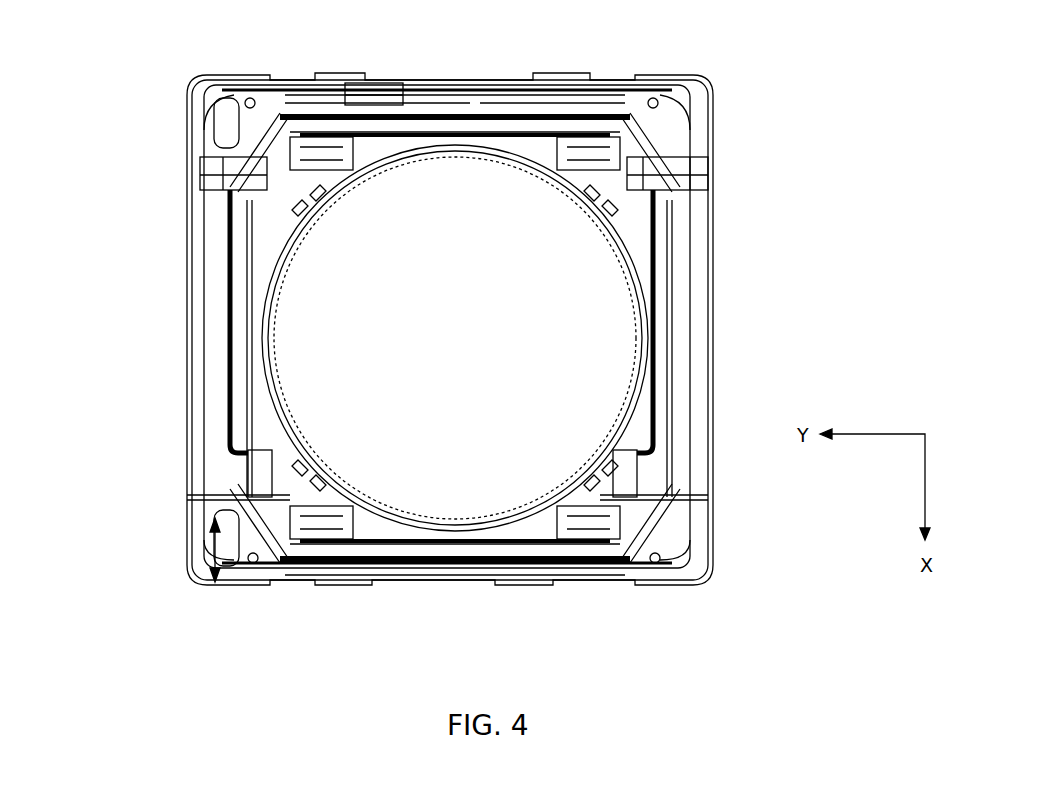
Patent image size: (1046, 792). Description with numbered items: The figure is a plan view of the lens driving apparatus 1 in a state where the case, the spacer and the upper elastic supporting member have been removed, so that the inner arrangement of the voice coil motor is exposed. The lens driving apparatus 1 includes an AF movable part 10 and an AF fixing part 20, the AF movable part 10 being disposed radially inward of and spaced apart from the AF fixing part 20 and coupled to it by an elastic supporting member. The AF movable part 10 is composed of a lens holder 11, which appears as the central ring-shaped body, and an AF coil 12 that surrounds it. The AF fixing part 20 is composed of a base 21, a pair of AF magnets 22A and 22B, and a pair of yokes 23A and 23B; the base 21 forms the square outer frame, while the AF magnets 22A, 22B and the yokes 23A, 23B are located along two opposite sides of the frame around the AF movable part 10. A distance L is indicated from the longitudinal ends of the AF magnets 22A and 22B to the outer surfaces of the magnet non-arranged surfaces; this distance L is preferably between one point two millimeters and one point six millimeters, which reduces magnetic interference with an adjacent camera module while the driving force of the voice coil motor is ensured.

The lens driving apparatus 1 is at (869, 125).
The AF movable part 10 is at (455, 338).
The lens holder 11 is at (594, 185).
The AF coil 12 is at (498, 120).
The AF fixing part 20 is at (447, 326).
The base 21 is at (338, 78).
The AF magnet 22A is at (210, 178).
The AF magnet 22B is at (690, 178).
The yoke 23A is at (210, 305).
The yoke 23B is at (688, 305).
The distance L is at (200, 560).